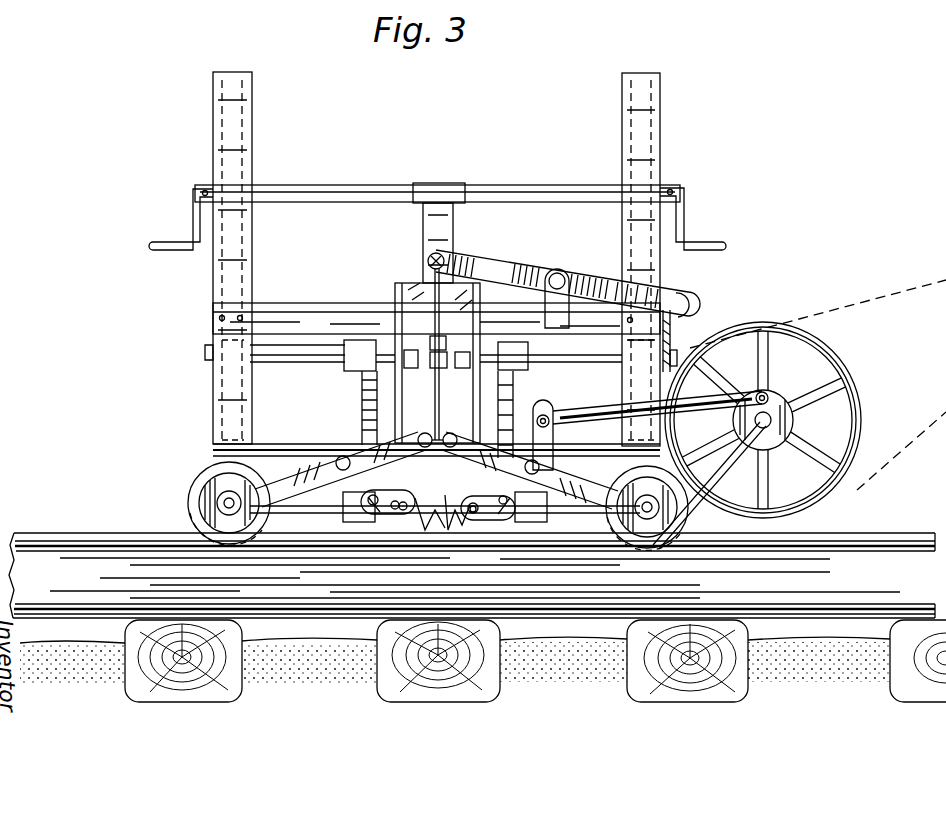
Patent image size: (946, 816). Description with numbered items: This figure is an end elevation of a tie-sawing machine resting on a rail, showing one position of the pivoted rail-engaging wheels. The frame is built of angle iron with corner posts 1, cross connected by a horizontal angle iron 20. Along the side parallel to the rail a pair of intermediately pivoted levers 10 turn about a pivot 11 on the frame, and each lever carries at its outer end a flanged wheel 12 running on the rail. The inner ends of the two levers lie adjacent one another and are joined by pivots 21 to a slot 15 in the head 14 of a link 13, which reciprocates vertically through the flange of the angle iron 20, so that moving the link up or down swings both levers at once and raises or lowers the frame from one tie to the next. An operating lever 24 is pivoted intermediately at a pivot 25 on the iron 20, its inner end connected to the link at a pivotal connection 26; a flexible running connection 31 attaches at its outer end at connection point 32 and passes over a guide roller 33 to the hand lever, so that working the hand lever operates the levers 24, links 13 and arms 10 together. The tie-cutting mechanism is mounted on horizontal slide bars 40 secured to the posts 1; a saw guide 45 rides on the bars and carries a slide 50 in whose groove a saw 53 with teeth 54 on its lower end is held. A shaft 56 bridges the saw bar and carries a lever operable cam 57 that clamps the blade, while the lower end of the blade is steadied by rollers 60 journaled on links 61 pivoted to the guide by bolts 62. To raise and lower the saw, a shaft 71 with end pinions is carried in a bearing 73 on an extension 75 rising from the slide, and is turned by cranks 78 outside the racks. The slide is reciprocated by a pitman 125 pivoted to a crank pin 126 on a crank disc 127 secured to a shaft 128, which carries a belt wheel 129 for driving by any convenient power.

The corner post 1 is at (213, 102).
The intermediately pivoted lever 10 is at (290, 470).
The pivot 11 is at (343, 456).
The flanged wheel 12 is at (190, 500).
The link 13 is at (432, 300).
The head 14 is at (438, 448).
The slot 15 is at (422, 430).
The angle iron 20 is at (298, 303).
The pivot 21 is at (450, 432).
The operating lever 24 is at (527, 270).
The pivot 25 is at (562, 274).
The pivotal connection 26 is at (430, 257).
The flexible running connection 31 is at (672, 332).
The connection point 32 is at (682, 298).
The guide roller 33 is at (672, 350).
The slide bar 40 is at (280, 356).
The saw guide 45 is at (490, 378).
The slide 50 is at (395, 290).
The saw 53 is at (450, 518).
The teeth 54 is at (440, 516).
The shaft 56 is at (452, 360).
The lever operable cam 57 is at (446, 340).
The roller 60 is at (395, 510).
The link 61 is at (438, 516).
The bolt 62 is at (373, 502).
The shaft 71 is at (330, 185).
The bearing 73 is at (442, 183).
The extension 75 is at (453, 218).
The crank 78 is at (196, 218).
The pitman 125 is at (588, 410).
The crank pin 126 is at (768, 395).
The crank disc 127 is at (790, 423).
The shaft 128 is at (768, 435).
The belt wheel 129 is at (860, 395).